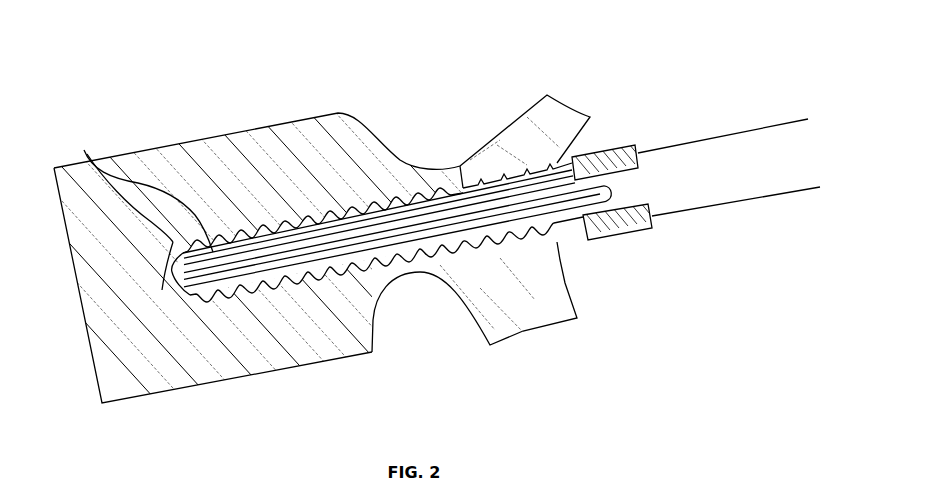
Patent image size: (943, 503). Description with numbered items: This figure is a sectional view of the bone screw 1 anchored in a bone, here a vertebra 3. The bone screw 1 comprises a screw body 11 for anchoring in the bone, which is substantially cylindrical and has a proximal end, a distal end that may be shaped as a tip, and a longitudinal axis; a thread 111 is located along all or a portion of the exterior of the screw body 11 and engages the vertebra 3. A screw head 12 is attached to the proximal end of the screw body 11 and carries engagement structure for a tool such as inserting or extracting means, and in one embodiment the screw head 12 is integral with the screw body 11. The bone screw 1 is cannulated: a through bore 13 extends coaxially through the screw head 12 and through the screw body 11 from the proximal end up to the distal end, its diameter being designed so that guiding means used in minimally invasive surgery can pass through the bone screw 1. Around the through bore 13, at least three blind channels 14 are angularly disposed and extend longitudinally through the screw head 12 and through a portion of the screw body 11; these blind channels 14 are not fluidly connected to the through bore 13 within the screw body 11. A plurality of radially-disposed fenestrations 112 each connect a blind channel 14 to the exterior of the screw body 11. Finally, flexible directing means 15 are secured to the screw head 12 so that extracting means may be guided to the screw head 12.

The bone screw 1 is at (410, 224).
The vertebra 3 is at (226, 138).
The screw body 11 is at (513, 247).
The screw head 12 is at (613, 241).
The through bore 13 is at (162, 290).
The blind channels 14 is at (84, 150).
The flexible directing means 15 is at (735, 203).
The thread 111 is at (460, 166).
The fenestrations 112 is at (300, 289).